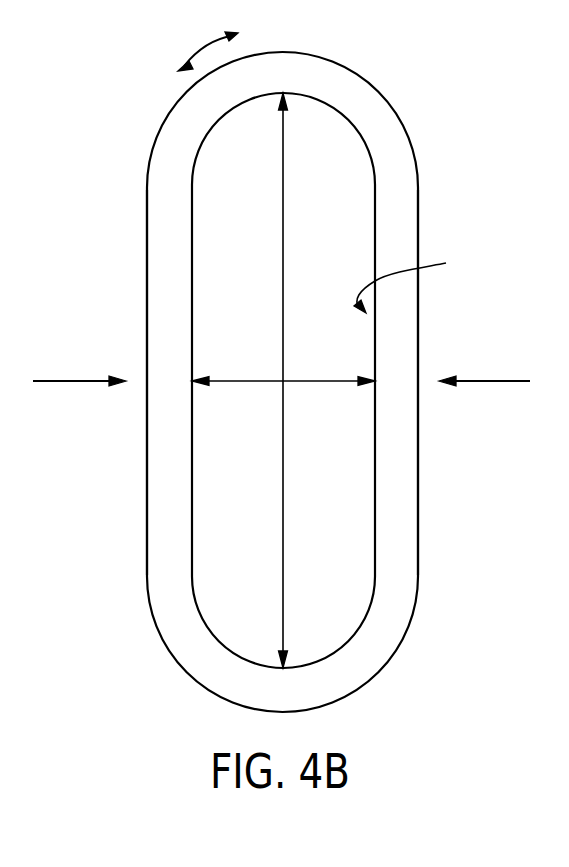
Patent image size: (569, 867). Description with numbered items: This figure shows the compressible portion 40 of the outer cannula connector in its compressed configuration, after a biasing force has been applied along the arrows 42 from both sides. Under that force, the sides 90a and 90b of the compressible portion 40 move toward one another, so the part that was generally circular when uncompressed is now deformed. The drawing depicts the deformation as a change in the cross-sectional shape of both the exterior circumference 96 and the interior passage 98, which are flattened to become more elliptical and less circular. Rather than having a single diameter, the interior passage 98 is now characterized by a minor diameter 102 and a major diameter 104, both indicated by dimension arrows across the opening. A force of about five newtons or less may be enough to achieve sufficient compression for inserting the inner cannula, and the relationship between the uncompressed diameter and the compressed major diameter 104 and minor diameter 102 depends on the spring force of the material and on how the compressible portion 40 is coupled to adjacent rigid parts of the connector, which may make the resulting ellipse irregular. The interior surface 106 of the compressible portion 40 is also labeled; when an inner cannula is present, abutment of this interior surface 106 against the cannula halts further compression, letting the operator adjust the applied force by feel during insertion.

The compressible portion 40 is at (350, 633).
The arrows 42 is at (85, 380).
The side 90a is at (167, 380).
The side 90b is at (398, 380).
The exterior circumference 96 is at (212, 46).
The interior passage 98 is at (260, 218).
The minor diameter 102 is at (335, 380).
The major diameter 104 is at (284, 472).
The interior surface 106 is at (419, 280).